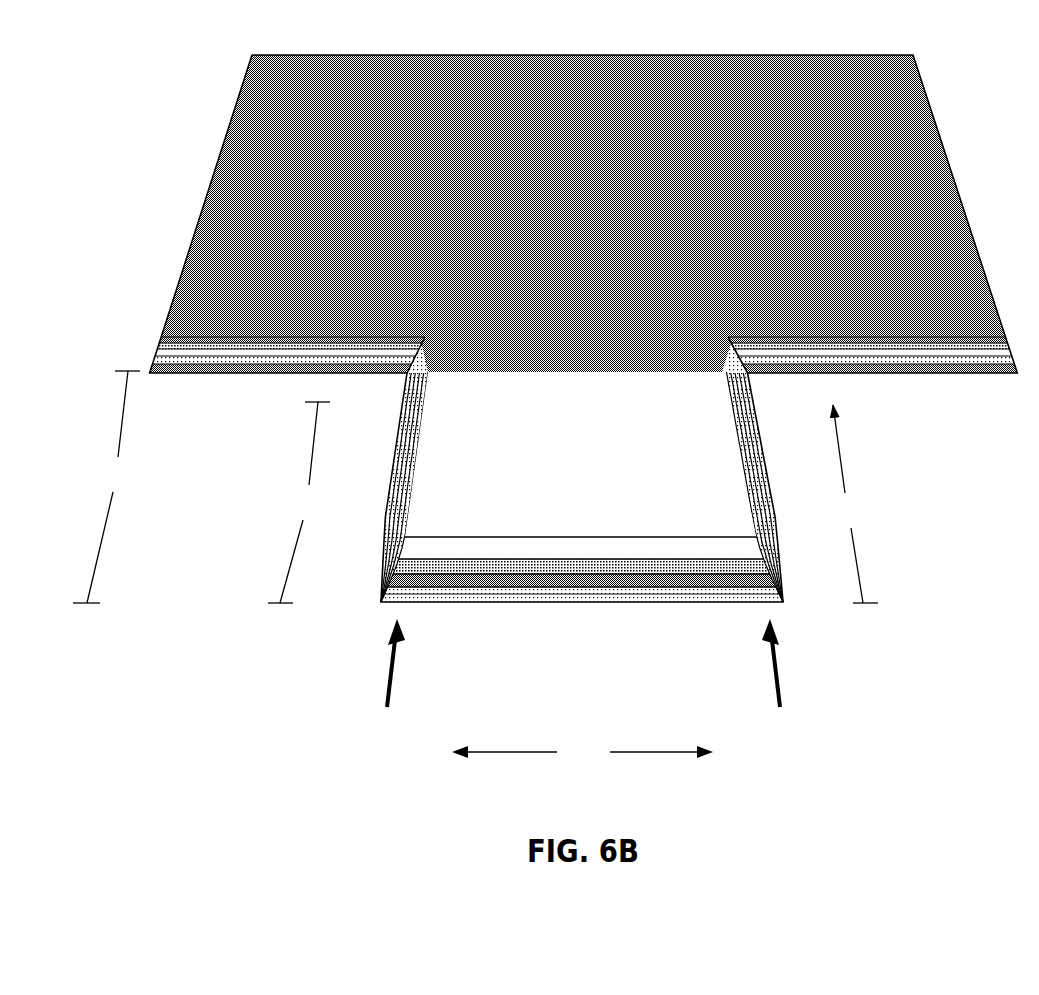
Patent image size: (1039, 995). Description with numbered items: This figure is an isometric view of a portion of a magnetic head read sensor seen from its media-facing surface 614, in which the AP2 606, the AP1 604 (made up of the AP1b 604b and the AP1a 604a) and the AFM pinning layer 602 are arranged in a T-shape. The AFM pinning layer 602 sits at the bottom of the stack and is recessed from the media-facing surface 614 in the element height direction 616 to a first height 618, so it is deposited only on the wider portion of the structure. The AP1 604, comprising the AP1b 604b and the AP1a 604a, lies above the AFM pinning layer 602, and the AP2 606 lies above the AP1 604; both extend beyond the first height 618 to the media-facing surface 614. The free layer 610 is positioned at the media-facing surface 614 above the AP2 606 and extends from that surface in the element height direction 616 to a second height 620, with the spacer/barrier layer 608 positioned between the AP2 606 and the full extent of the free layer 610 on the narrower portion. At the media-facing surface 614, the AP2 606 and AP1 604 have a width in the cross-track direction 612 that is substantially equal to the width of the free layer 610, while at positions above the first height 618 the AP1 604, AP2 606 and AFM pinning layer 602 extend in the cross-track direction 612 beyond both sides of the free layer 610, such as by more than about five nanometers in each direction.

The AFM pinning layer 602 is at (232, 373).
The AP1 604 is at (787, 585).
The AP1a 604a is at (610, 596).
The AP1b 604b is at (500, 592).
The AP2 606 is at (738, 637).
The spacer/barrier layer 608 is at (395, 572).
The free layer 610 is at (580, 454).
The cross-track direction 612 is at (582, 752).
The media-facing surface 614 is at (583, 679).
The element height direction 616 is at (854, 504).
The first height 618 is at (106, 487).
The second height 620 is at (299, 502).